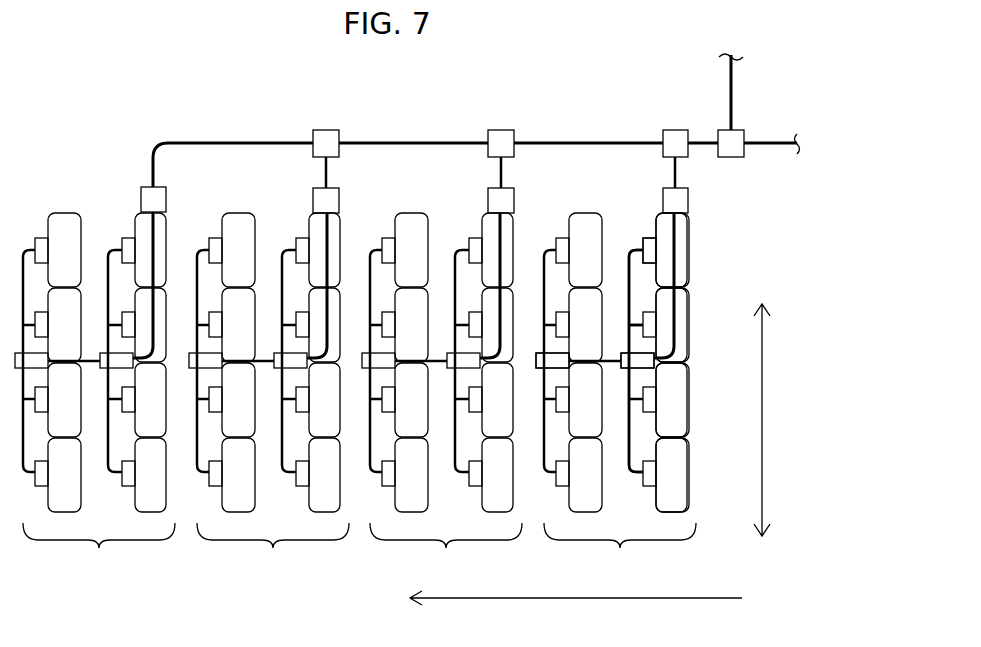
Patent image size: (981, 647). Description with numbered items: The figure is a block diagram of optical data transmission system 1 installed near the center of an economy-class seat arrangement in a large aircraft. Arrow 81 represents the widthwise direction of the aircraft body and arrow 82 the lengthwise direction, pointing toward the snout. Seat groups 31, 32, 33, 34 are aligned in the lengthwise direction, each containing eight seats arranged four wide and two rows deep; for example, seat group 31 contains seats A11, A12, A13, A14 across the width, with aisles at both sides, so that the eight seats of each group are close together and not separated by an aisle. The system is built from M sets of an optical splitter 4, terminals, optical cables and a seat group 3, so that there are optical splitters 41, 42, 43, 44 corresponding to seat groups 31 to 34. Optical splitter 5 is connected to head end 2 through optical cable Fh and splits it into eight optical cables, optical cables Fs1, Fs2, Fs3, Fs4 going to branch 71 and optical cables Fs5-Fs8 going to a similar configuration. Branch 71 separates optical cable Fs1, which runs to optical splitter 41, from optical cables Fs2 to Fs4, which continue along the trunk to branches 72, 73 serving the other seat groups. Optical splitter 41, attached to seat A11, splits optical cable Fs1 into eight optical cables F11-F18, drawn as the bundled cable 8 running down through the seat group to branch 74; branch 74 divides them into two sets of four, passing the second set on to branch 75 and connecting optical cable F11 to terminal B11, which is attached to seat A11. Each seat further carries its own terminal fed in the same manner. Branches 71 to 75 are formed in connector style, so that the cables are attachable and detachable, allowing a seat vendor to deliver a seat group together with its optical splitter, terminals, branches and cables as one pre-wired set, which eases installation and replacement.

The optical data transmission system 1 is at (738, 79).
The head end 2 is at (463, 153).
The seat group 3 is at (640, 153).
The optical splitter 4 is at (770, 138).
The optical splitter 5 is at (729, 158).
The supply pipe 8 is at (681, 317).
The seat group 31 is at (616, 395).
The seat group 32 is at (442, 395).
The seat group 33 is at (269, 395).
The seat group 34 is at (95, 395).
The optical splitter 41 is at (662, 196).
The optical splitter 42 is at (487, 206).
The optical splitter 43 is at (312, 206).
The optical splitter 44 is at (140, 202).
The branch 71 is at (677, 128).
The branch 72 is at (501, 128).
The branch 73 is at (323, 129).
The branch 74 is at (628, 370).
The branch 75 is at (548, 370).
The arrow 81 is at (765, 468).
The arrow 82 is at (714, 594).
The optical cable Fh is at (735, 70).
The optical cable Fs1 is at (665, 175).
The optical cable Fs2 is at (495, 178).
The optical cable Fs3 is at (320, 175).
The optical cable Fs4 is at (150, 172).
The optical cables Fs5-Fs8 is at (786, 155).
The seat A11 is at (690, 226).
The seat A12 is at (690, 306).
The seat A13 is at (690, 392).
The seat A14 is at (690, 470).
The terminal B11 is at (650, 243).
The optical cable F11 is at (636, 288).
The optical cables F11-F18 is at (678, 263).